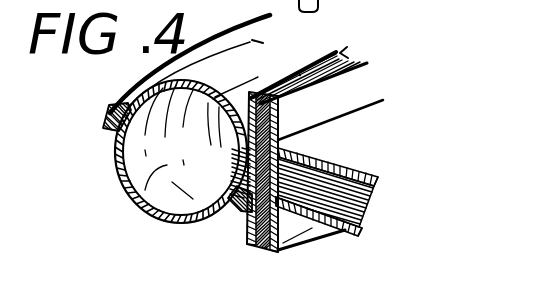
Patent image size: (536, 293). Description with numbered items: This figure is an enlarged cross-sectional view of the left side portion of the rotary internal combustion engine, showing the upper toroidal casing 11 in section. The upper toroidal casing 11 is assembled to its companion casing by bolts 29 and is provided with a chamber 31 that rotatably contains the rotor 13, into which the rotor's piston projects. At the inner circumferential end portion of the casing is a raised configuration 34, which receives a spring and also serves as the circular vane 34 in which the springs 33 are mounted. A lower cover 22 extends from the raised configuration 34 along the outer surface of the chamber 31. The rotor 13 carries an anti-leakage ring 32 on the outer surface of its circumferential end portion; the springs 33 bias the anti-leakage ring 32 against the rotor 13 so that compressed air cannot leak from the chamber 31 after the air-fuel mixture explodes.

The upper toroidal casing 11 is at (114, 157).
The rotor 13 is at (360, 204).
The lower cover 22 is at (363, 146).
The bolt 29 is at (120, 111).
The chamber 31 is at (138, 203).
The anti-leakage ring 32 is at (248, 196).
The spring 33 is at (265, 249).
The raised configuration 34 is at (344, 48).